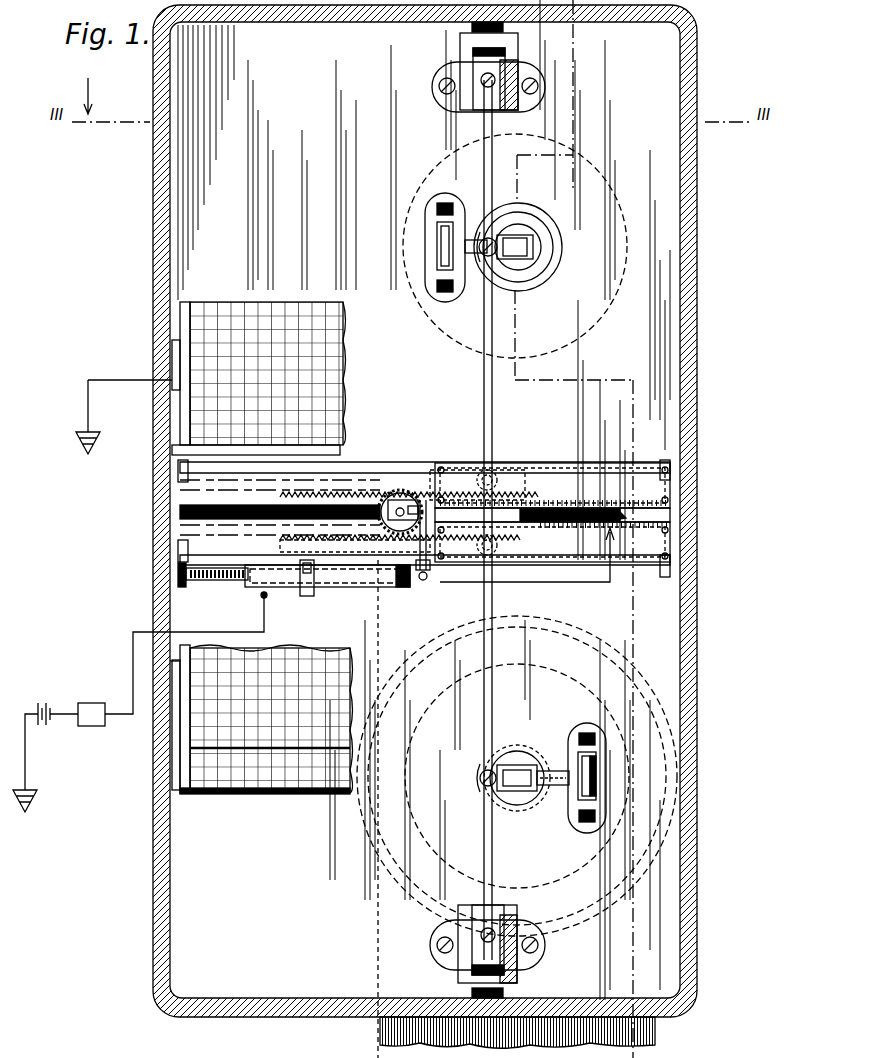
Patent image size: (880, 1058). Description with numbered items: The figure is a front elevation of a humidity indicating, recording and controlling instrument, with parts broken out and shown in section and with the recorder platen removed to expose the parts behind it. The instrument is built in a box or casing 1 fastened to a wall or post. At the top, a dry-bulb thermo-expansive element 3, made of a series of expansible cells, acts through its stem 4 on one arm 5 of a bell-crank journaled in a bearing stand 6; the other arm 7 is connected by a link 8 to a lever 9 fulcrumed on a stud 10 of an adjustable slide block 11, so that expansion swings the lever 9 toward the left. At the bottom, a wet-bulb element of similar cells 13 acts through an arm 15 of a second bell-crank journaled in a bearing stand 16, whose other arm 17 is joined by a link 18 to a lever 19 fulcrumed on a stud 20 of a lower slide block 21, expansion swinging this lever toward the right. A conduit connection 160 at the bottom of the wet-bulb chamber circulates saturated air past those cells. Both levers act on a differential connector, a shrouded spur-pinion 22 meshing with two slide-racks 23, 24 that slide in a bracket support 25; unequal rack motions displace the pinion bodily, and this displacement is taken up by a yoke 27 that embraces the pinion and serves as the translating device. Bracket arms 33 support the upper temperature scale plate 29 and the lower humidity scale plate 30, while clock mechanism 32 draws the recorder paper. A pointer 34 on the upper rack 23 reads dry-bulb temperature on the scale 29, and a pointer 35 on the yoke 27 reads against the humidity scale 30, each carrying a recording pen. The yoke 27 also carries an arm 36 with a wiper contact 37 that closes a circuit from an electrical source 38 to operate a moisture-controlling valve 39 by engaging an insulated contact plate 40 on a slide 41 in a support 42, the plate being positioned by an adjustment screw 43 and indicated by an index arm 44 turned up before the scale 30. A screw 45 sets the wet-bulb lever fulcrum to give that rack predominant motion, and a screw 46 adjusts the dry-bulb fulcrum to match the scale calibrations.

The casing 1 is at (690, 336).
The thermo-expansive element 3 is at (608, 186).
The stem 4 is at (540, 248).
The arm of bell-crank 5 is at (522, 237).
The bearing stand 6 is at (440, 271).
The arm of bell-crank 7 is at (440, 234).
The link 8 is at (480, 262).
The lever 9 is at (488, 168).
The stud 10 is at (508, 76).
The slide block 11 is at (478, 70).
The containers or cells 13 is at (553, 672).
The arm of bell-crank 15 is at (525, 765).
The bearing stand 16 is at (586, 768).
The arm of bell-crank 17 is at (598, 770).
The link 18 is at (553, 770).
The lever 19 is at (493, 614).
The stud 20 is at (472, 940).
The slide block 21 is at (500, 950).
The shrouded spur-pinion 22 is at (404, 498).
The slide-rack 23 is at (432, 478).
The slide-rack 24 is at (292, 541).
The bracket support 25 is at (178, 523).
The yoke 27 is at (398, 500).
The scale plate 29 is at (552, 485).
The scale plate 30 is at (552, 542).
The clock mechanism 32 is at (160, 740).
The bracket arms 33 is at (178, 470).
The pointer 34 is at (516, 505).
The pointer 35 is at (672, 511).
The member 36 is at (438, 544).
The wiper contact 37 is at (424, 580).
The electrical source 38 is at (48, 707).
The moisture-controlling valve 39 is at (93, 704).
The contact plate 40 is at (402, 588).
The slide 41 is at (336, 588).
The support 42 is at (306, 597).
The adjustment screw 43 is at (215, 582).
The arm 44 is at (527, 557).
The screw 45 is at (506, 990).
The screw 46 is at (505, 28).
The conduit connection 160 is at (380, 1040).